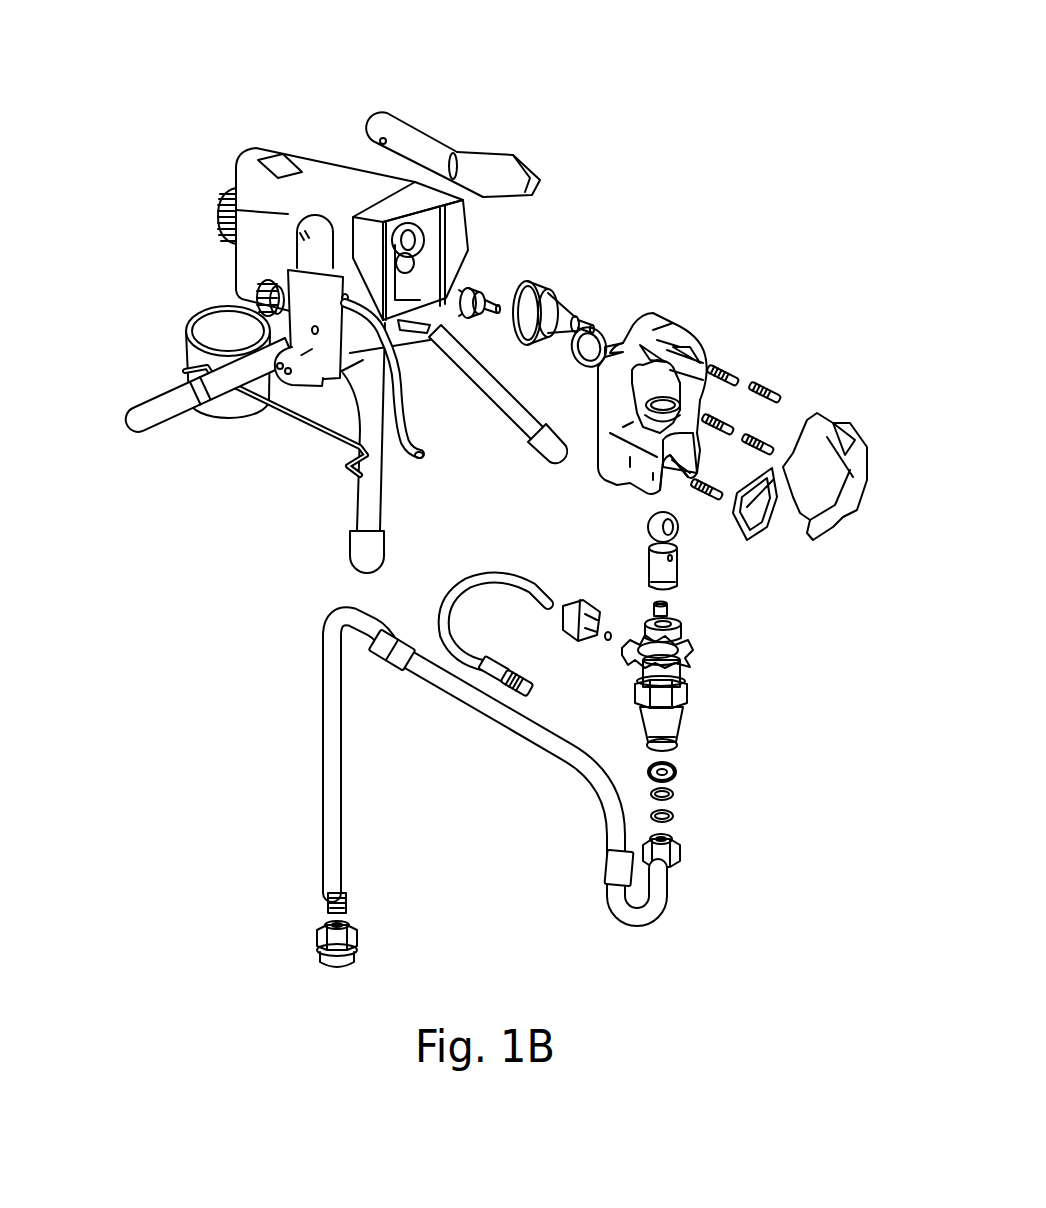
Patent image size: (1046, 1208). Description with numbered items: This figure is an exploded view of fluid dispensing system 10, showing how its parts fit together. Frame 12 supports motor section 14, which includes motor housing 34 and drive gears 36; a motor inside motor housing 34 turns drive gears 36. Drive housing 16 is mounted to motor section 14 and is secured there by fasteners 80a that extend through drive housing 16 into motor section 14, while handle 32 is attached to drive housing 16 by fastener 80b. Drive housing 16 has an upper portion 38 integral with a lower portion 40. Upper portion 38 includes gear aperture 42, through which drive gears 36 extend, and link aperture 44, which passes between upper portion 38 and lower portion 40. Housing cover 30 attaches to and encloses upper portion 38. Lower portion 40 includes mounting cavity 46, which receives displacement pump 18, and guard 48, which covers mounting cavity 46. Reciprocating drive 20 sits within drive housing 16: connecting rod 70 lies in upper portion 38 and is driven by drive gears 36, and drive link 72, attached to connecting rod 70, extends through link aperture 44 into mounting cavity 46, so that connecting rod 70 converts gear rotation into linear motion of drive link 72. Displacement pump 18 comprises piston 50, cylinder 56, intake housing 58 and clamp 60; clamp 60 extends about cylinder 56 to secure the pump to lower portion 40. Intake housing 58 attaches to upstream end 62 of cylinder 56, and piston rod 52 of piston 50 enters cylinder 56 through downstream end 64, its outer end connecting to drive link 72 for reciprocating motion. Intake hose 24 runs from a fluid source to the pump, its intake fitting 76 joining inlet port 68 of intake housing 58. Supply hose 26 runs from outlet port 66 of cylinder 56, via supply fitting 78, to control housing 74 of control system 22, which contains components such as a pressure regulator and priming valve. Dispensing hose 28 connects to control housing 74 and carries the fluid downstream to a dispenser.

The fluid dispensing system 10 is at (182, 122).
The frame 12 is at (172, 400).
The motor section 14 is at (312, 163).
The drive housing 16 is at (656, 302).
The displacement pump 18 is at (698, 700).
The reciprocating drive 20 is at (689, 562).
The control system 22 is at (288, 270).
The intake hose 24 is at (530, 775).
The supply hose 26 is at (471, 575).
The dispensing hose 28 is at (412, 401).
The housing cover 30 is at (843, 477).
The handle 32 is at (422, 150).
The motor housing 34 is at (333, 192).
The drive gears 36 is at (492, 286).
The upper portion 38 is at (693, 333).
The lower portion 40 is at (605, 462).
The gear aperture 42 is at (640, 372).
The link aperture 44 is at (695, 404).
The mounting cavity 46 is at (678, 480).
The guard 48 is at (767, 527).
The piston 50 is at (647, 615).
The piston rod 52 is at (662, 625).
The cylinder 56 is at (674, 673).
The intake housing 58 is at (640, 727).
The clamp 60 is at (678, 655).
The upstream end 62 is at (682, 680).
The downstream end 64 is at (641, 637).
The outlet port 66 is at (626, 650).
The inlet port 68 is at (677, 745).
The connecting rod 70 is at (652, 518).
The drive link 72 is at (652, 562).
The control housing 74 is at (322, 307).
The intake fitting 76 is at (690, 757).
The supply fitting 78 is at (563, 632).
The fasteners 80a is at (720, 490).
The fastener 80b is at (720, 366).